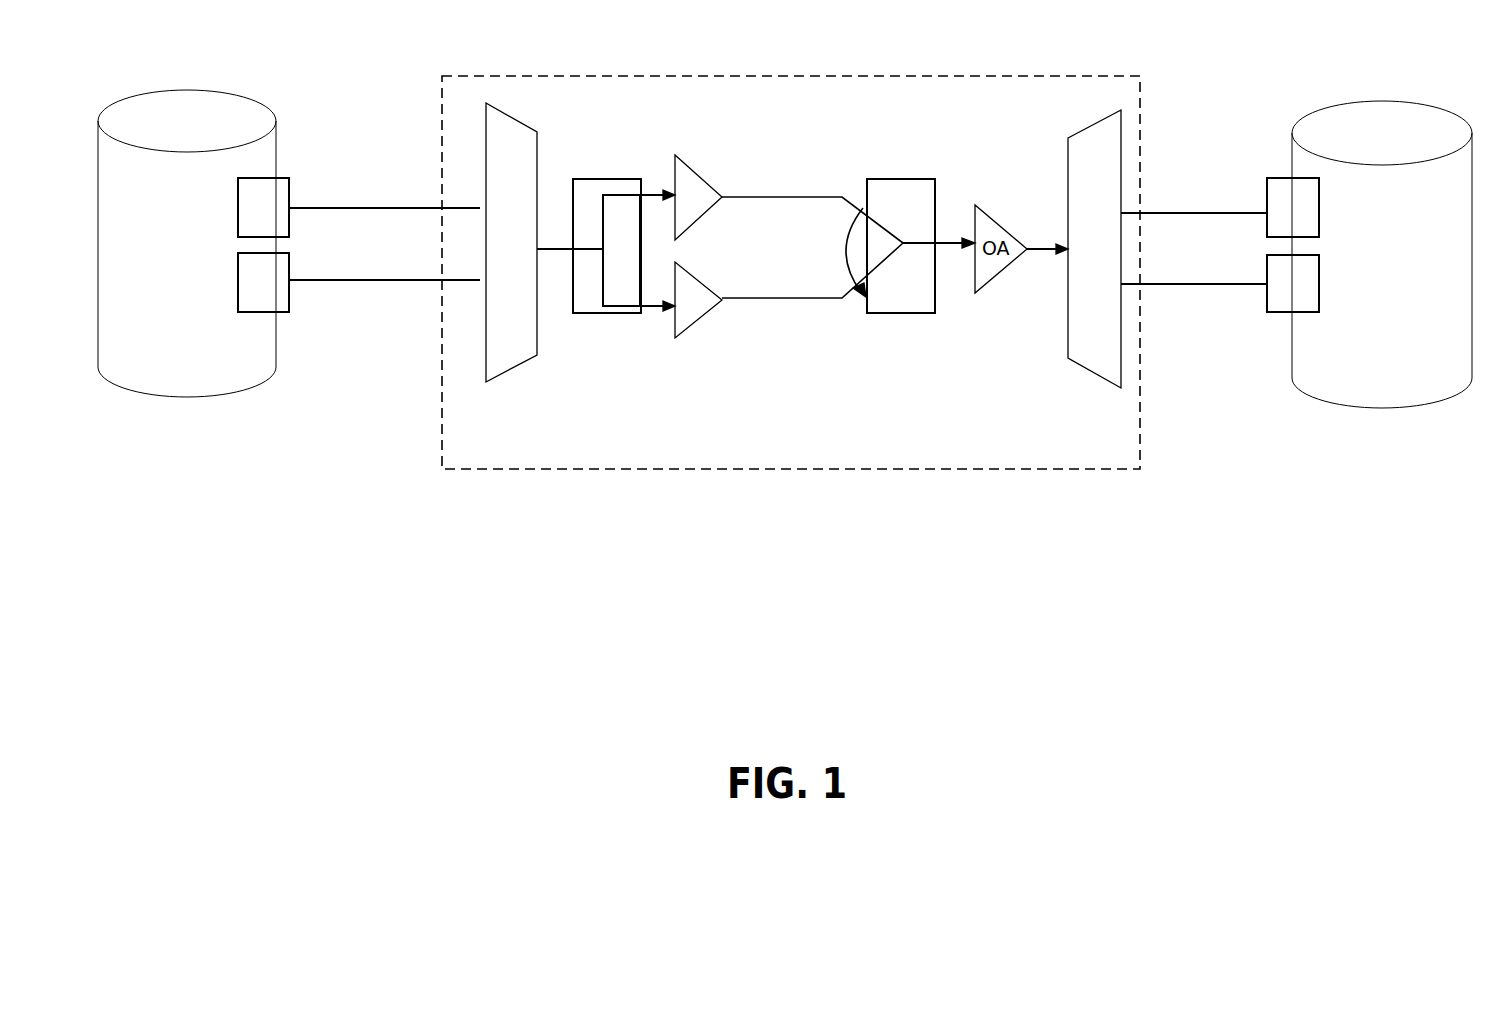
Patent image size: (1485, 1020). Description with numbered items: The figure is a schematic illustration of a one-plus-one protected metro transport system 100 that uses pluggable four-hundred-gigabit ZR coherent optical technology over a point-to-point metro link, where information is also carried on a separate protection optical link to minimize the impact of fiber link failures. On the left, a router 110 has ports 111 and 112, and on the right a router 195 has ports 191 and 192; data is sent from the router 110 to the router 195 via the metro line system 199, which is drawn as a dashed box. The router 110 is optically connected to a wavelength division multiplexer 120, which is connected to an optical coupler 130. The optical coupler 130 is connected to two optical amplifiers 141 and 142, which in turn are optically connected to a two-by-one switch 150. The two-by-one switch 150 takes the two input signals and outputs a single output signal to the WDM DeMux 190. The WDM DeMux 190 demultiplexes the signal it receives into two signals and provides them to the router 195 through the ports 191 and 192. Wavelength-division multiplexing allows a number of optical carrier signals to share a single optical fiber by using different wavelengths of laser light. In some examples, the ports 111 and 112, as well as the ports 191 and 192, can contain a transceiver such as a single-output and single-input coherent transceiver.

The 1+1 protected metro transport system 100 is at (827, 694).
The router 110 is at (175, 400).
The port 111 is at (281, 312).
The port 112 is at (290, 180).
The wavelength division multiplexer 120 is at (490, 382).
The optical coupler 130 is at (618, 315).
The optical amplifier 141 is at (698, 176).
The optical amplifier 142 is at (703, 318).
The two-by-one switch 150 is at (913, 313).
The WDM DeMux 190 is at (1120, 390).
The port 191 is at (1268, 180).
The port 192 is at (1266, 312).
The router 195 is at (1377, 408).
The metro line system 199 is at (897, 470).